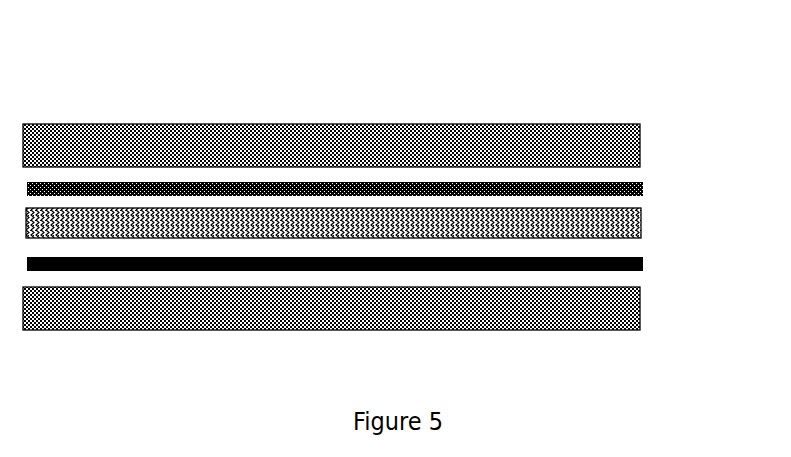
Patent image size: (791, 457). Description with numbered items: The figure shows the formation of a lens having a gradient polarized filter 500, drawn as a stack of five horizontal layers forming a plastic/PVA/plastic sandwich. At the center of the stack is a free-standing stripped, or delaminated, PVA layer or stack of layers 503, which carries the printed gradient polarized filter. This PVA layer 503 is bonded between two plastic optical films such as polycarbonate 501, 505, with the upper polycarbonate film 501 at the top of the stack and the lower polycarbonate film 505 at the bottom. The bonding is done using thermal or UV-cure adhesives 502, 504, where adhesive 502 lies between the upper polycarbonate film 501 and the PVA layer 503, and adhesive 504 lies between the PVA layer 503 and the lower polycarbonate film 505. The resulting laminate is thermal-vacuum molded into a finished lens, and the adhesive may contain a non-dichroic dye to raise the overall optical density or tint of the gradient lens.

The gradient polarized filter 500 is at (396, 190).
The polycarbonate film 501 is at (640, 124).
The adhesive 502 is at (643, 182).
The PVA layer 503 is at (641, 228).
The adhesive 504 is at (643, 262).
The polycarbonate film 505 is at (640, 310).